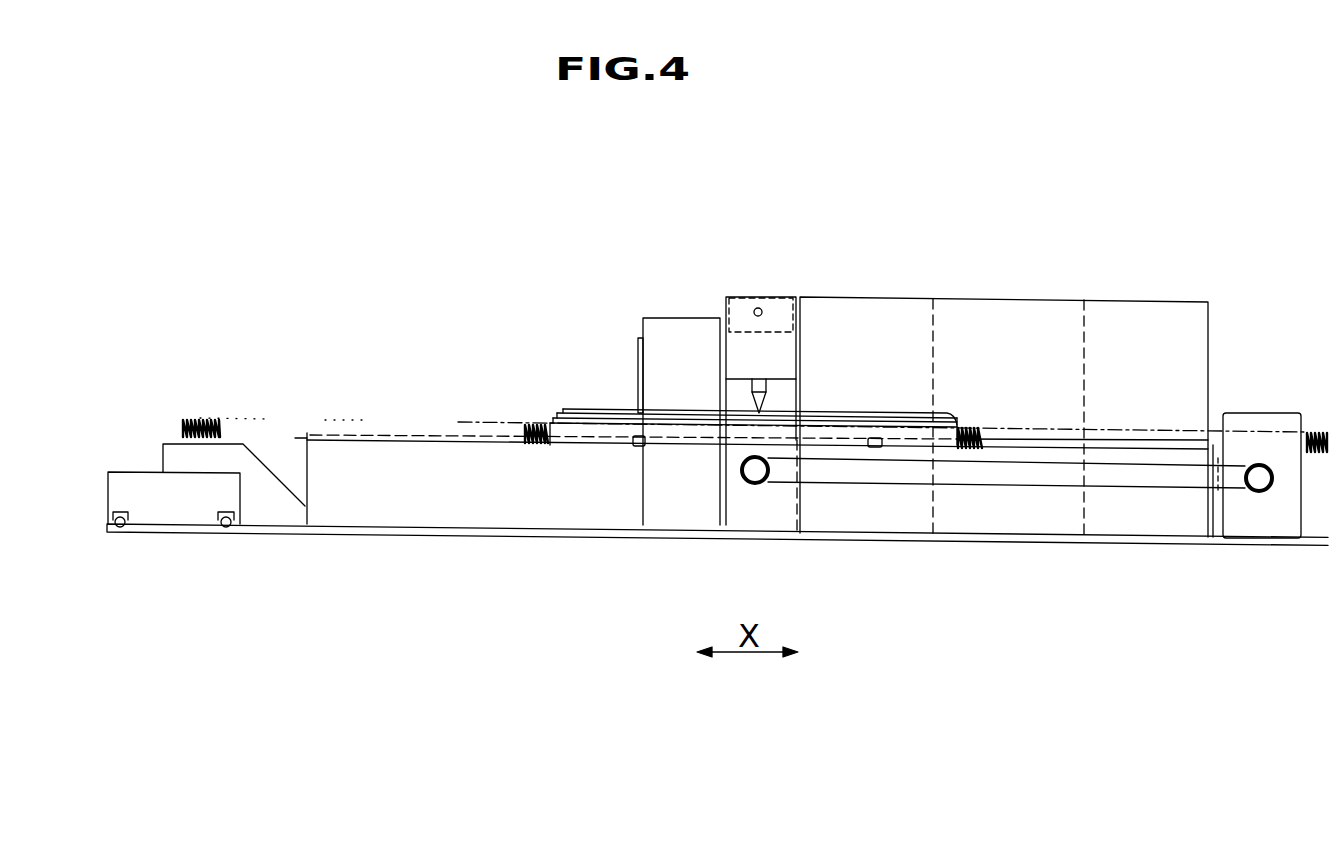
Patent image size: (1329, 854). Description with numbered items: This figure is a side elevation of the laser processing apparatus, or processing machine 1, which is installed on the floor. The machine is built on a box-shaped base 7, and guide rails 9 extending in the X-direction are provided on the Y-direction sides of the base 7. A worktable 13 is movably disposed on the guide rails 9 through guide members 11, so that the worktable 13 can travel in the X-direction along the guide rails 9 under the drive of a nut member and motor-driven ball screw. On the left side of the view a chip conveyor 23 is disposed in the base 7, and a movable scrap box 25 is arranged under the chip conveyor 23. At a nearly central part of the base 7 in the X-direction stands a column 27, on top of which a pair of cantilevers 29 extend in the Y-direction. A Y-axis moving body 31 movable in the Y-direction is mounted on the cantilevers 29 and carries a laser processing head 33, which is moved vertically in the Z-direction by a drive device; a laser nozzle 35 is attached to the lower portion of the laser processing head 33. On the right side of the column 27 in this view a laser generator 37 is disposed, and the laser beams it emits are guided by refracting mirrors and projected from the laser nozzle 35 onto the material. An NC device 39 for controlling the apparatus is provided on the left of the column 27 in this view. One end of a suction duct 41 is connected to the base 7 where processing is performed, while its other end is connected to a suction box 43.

The processing machine 1 is at (810, 245).
The base 7 is at (545, 527).
The guide rails 9 is at (497, 437).
The guide members 11 is at (636, 447).
The worktable 13 is at (459, 426).
The chip conveyor 23 is at (172, 453).
The movable scrap box 25 is at (120, 487).
The column 27 is at (727, 313).
The cantilevers 29 is at (772, 297).
The Y-axis moving body 31 is at (733, 350).
The laser processing head 33 is at (770, 389).
The laser nozzle 35 is at (757, 410).
The laser generator 37 is at (1050, 310).
The NC device 39 is at (653, 361).
The suction duct 41 is at (971, 482).
The suction box 43 is at (1265, 413).